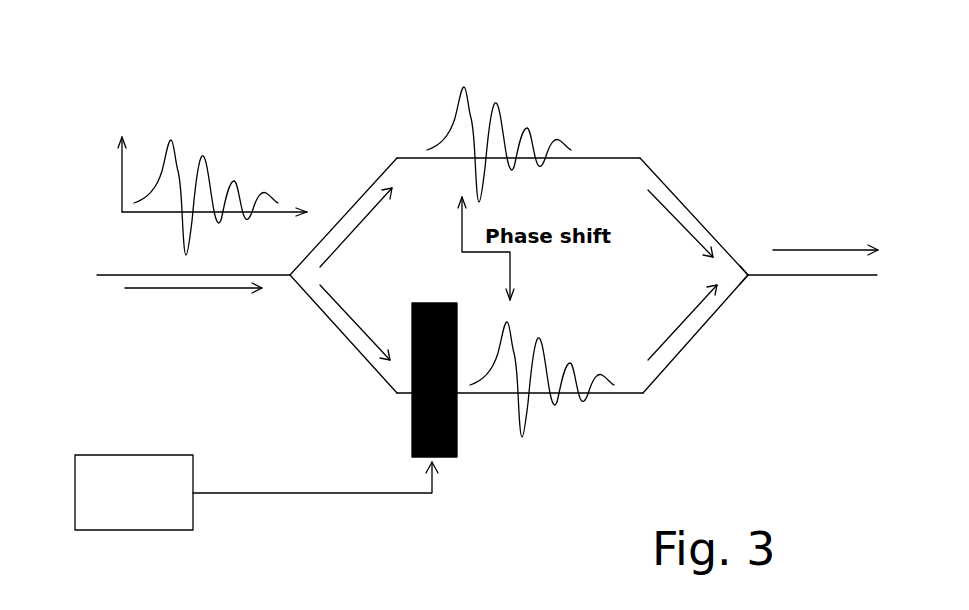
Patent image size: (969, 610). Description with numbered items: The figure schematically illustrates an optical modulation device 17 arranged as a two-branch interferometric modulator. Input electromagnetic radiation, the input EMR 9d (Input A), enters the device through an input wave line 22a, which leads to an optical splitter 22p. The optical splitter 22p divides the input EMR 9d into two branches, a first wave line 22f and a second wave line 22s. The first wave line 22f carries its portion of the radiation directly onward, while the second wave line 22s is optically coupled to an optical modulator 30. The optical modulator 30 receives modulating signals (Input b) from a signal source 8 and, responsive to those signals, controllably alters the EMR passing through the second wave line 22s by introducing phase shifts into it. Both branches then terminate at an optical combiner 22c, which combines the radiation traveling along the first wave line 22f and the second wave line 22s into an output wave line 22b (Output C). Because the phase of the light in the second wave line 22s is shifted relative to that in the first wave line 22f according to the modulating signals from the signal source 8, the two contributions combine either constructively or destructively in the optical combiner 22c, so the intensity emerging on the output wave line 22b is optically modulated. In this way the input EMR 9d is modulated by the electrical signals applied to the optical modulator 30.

The signal source 8 is at (147, 452).
The input EMR 9d is at (213, 120).
The optical modulation device 17 is at (341, 123).
The input wave line 22a is at (140, 275).
The optical splitter 22p is at (290, 275).
The first wave line 22f is at (623, 158).
The second wave line 22s is at (673, 357).
The optical combiner 22c is at (750, 275).
The output wave line 22b is at (807, 275).
The optical modulator 30 is at (412, 425).